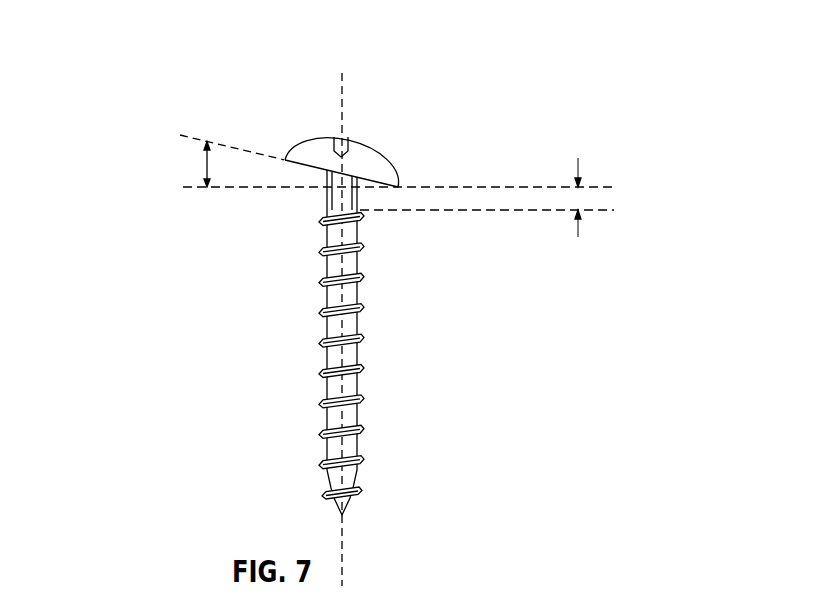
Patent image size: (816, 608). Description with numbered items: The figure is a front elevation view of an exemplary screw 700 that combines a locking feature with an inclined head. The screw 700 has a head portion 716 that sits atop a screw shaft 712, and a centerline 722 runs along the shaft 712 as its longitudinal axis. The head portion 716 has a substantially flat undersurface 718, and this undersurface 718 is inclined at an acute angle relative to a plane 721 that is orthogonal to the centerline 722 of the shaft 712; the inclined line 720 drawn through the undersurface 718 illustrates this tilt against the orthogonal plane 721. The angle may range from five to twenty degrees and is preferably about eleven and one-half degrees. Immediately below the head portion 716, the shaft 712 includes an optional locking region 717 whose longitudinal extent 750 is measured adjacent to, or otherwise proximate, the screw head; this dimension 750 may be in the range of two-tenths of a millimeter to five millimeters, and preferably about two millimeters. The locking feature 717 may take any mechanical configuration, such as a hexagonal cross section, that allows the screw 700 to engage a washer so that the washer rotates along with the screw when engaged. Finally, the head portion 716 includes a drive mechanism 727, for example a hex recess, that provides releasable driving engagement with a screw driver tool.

The screw 700 is at (138, 36).
The screw shaft 712 is at (325, 298).
The head portion 716 is at (387, 163).
The locking region 717 is at (323, 198).
The undersurface 718 is at (312, 165).
The head underside reference plane 720 is at (205, 163).
The plane 721 is at (222, 189).
The centerline 722 is at (346, 77).
The drive mechanism 727 is at (343, 136).
The longitudinal extent 750 is at (580, 170).